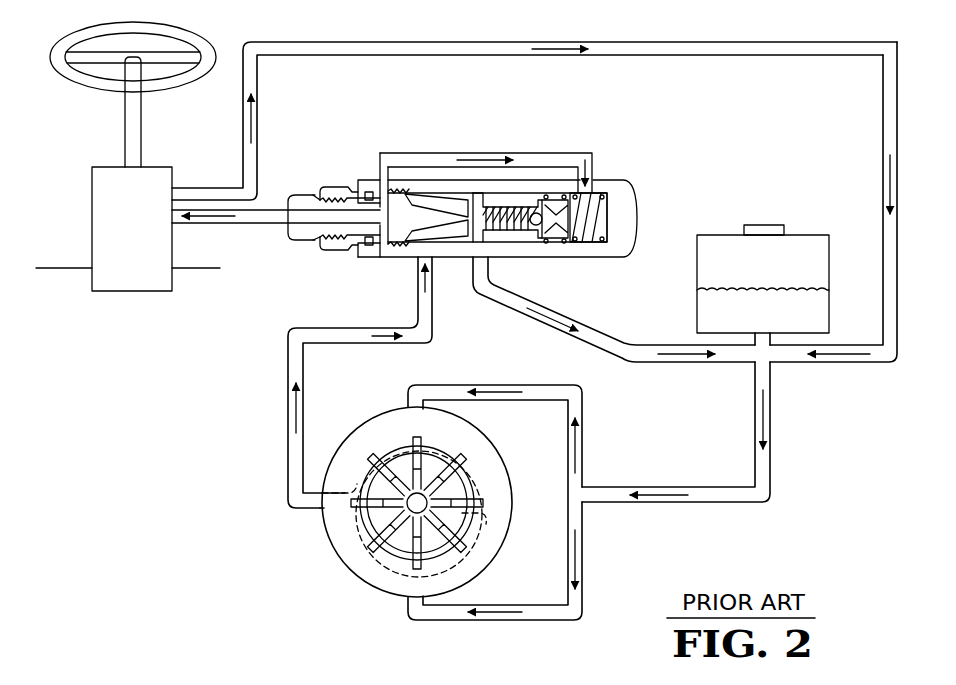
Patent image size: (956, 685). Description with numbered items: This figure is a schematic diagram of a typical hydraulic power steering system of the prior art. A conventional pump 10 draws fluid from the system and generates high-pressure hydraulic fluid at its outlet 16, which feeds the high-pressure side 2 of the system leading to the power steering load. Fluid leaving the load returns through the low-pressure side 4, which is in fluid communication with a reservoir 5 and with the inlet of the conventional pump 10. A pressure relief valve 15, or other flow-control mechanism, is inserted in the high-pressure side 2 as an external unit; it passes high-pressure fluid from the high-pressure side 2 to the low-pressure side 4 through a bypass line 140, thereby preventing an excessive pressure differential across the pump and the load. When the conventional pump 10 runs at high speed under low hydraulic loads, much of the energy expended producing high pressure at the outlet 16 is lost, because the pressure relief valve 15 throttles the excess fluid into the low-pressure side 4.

The high-pressure side 2 is at (253, 224).
The low-pressure side 4 is at (802, 362).
The reservoir 5 is at (800, 240).
The conventional pump 10 is at (327, 565).
The pressure relief valve 15 is at (604, 150).
The outlet 16 is at (333, 503).
The bypass line 140 is at (535, 310).